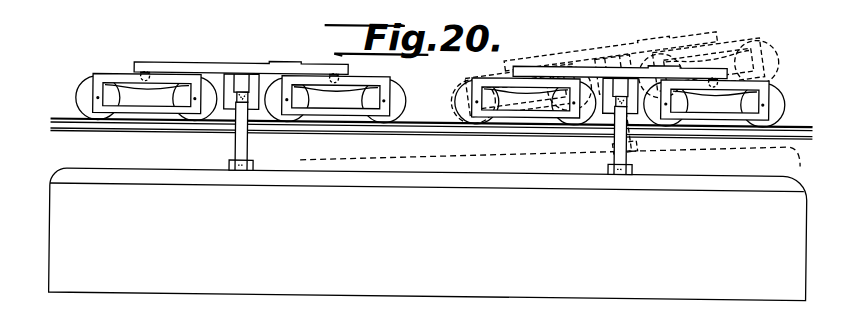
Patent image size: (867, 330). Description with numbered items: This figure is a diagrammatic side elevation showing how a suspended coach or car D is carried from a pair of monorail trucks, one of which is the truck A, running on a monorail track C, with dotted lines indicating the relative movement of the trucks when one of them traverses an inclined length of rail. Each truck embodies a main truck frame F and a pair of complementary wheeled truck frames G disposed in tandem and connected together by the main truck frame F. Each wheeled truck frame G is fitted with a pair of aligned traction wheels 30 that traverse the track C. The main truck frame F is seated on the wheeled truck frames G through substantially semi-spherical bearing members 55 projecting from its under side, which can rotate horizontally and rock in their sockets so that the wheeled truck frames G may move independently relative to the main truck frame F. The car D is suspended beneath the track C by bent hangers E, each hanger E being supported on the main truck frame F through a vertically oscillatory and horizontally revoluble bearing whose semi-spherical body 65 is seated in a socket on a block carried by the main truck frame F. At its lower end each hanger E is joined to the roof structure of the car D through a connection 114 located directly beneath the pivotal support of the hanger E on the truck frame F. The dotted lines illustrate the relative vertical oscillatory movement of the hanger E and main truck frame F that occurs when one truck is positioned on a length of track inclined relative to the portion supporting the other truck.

The monorail truck A is at (126, 55).
The semi-spherical bearing member 55 is at (143, 70).
The main truck frame F is at (195, 65).
The wheeled truck frame G is at (96, 74).
The traction wheel 30 is at (84, 90).
The monorail track C is at (62, 118).
The coach or car D is at (116, 168).
The bent hanger E is at (236, 141).
The connection 114 is at (223, 160).
The semi-spherical body 65 is at (243, 100).